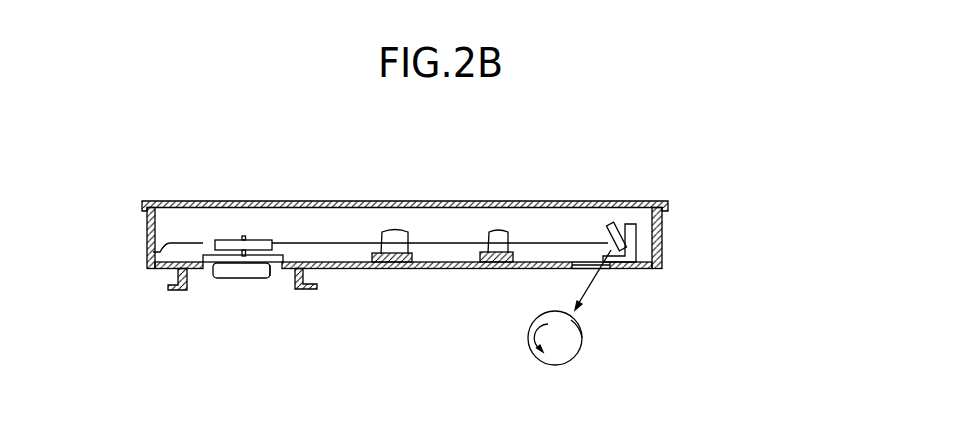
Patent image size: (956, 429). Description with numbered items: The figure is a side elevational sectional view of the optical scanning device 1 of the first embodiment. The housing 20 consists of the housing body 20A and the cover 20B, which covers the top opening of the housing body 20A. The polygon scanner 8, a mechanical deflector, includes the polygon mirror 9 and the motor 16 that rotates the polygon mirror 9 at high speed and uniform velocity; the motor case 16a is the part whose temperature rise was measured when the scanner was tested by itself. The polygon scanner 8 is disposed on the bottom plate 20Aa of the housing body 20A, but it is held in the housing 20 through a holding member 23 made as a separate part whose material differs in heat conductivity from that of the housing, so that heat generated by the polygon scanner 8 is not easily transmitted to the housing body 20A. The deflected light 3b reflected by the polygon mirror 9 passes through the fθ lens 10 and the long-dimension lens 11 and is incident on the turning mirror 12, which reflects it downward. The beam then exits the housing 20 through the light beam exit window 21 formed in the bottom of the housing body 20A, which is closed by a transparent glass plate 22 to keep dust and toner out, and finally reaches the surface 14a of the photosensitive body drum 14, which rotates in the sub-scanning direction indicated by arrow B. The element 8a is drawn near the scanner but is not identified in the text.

The optical scanning device 1 is at (124, 207).
The polygon scanner 8 is at (260, 229).
The circuit board of light source unit 8a is at (153, 252).
The polygon mirror 9 is at (216, 241).
The fθ lens 10 is at (394, 230).
The long-dimension lens 11 is at (502, 230).
The turning mirror 12 is at (603, 224).
The photosensitive body drum 14 is at (572, 352).
The surface of photosensitive body drum 14a is at (580, 327).
The motor 16 is at (231, 291).
The motor case 16a is at (272, 276).
The housing 20 is at (745, 167).
The housing body 20A is at (663, 226).
The bottom plate 20Aa is at (353, 269).
The cover 20B is at (648, 194).
The light beam exit window 21 is at (574, 278).
The transparent glass plate 22 is at (613, 270).
The holding member 23 is at (178, 279).
The deflected light 3b is at (590, 283).
The sub-scanning direction arrow B is at (530, 332).